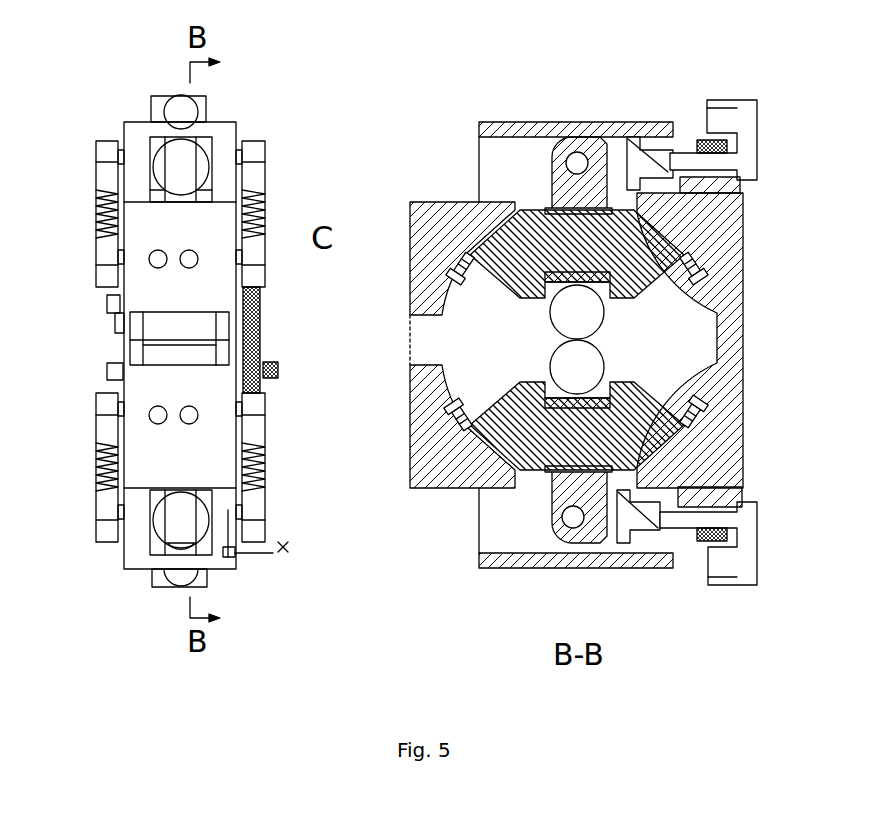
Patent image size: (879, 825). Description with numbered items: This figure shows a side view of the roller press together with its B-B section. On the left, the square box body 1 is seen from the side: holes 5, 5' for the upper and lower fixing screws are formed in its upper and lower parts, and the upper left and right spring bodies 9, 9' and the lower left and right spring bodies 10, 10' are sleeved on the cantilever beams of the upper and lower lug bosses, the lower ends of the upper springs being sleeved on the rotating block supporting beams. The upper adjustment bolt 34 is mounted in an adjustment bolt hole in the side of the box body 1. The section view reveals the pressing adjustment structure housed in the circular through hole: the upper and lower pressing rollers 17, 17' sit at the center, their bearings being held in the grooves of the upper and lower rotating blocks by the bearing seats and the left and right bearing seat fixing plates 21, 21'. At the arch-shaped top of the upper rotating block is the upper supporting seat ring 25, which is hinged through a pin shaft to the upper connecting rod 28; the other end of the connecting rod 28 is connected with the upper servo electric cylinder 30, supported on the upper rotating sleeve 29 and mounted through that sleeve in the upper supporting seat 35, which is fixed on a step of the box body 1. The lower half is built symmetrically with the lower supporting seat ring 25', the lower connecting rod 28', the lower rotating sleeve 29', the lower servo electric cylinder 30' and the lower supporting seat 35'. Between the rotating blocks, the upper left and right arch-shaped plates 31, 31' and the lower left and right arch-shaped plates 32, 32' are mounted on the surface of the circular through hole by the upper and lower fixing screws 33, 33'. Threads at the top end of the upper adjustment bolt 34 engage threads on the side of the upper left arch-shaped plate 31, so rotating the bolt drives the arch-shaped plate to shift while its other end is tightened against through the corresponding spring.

The box body 1 is at (140, 224).
The upper fixing screw hole 5 is at (123, 244).
The lower fixing screw hole 5' is at (121, 407).
The upper left spring body 9 is at (83, 214).
The upper right spring body 9' is at (282, 208).
The lower left spring body 10 is at (78, 467).
The lower right spring body 10' is at (289, 467).
The upper pressing roller 17 is at (483, 312).
The lower pressing roller 17' is at (480, 365).
The left bearing seat fixing plate 21 is at (523, 250).
The right bearing seat fixing plate 21' is at (577, 499).
The upper supporting seat ring 25 is at (386, 136).
The lower supporting seat ring 25' is at (389, 540).
The upper connecting rod 28 is at (666, 124).
The lower connecting rod 28' is at (660, 553).
The upper rotating sleeve 29 is at (749, 127).
The lower rotating sleeve 29' is at (752, 521).
The upper servo electric cylinder 30 is at (715, 119).
The lower servo electric cylinder 30' is at (733, 543).
The upper left arch-shaped plate 31 is at (418, 270).
The upper right arch-shaped plate 31' is at (742, 264).
The lower left arch-shaped plate 32 is at (416, 400).
The lower right arch-shaped plate 32' is at (742, 378).
The upper fixing screw 33 is at (413, 264).
The lower fixing screw 33' is at (409, 421).
The upper adjustment bolt 34 is at (112, 305).
The upper supporting seat 35 is at (740, 172).
The lower supporting seat 35' is at (742, 483).